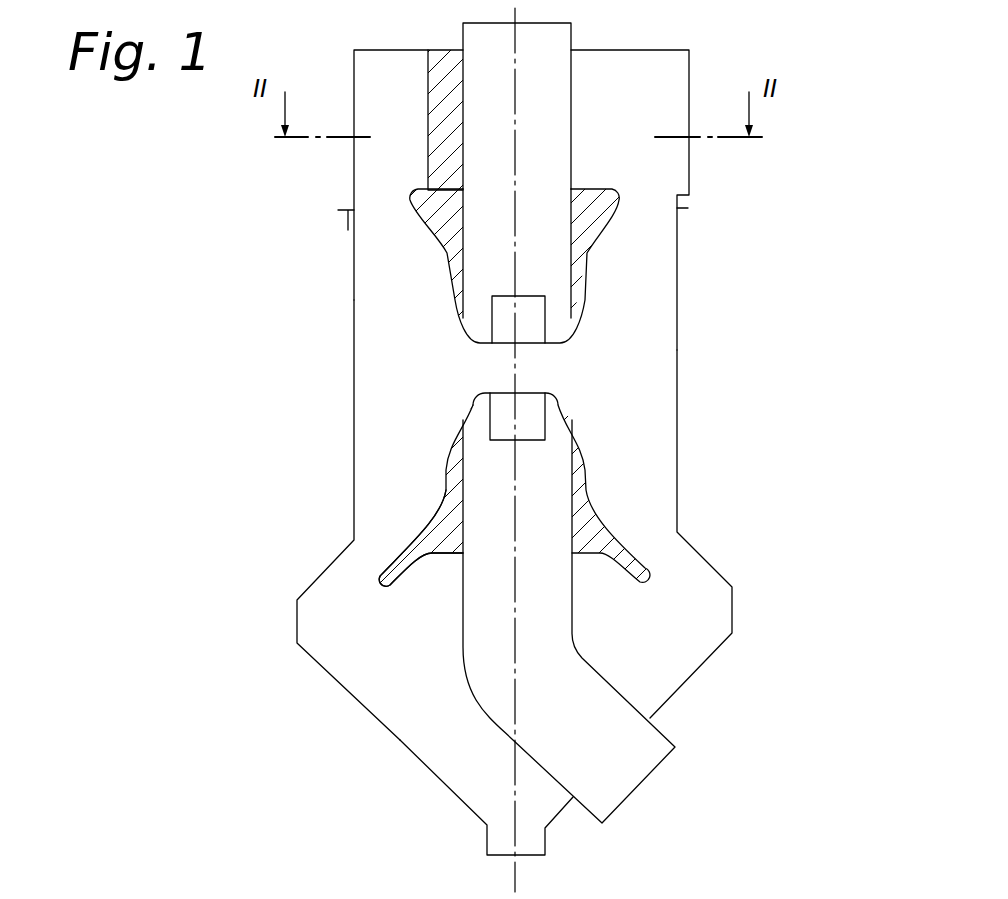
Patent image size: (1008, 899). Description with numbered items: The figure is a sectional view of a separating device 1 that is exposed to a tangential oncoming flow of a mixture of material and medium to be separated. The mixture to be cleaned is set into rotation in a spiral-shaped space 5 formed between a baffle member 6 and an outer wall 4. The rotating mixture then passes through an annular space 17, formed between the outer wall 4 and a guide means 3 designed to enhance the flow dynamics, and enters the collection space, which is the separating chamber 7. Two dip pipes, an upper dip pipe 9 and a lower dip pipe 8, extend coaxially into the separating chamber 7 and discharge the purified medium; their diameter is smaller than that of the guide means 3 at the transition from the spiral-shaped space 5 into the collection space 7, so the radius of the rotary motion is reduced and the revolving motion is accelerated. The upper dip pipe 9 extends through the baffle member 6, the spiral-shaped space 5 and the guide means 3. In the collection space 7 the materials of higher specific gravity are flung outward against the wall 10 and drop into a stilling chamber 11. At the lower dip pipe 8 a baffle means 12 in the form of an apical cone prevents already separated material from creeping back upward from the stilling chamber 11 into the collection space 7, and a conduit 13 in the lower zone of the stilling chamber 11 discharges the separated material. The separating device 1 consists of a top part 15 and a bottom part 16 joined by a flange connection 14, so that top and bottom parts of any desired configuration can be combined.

The separating device 1 is at (180, 236).
The guide means 3 is at (445, 218).
The outer wall 4 is at (353, 95).
The spiral-shaped space 5 is at (603, 87).
The baffle member 6 is at (448, 63).
The separating chamber 7 is at (585, 368).
The lower dip pipe 8 is at (552, 467).
The upper dip pipe 9 is at (545, 55).
The wall of the collecting space 10 is at (354, 372).
The stilling chamber 11 is at (688, 612).
The baffle means 12 is at (442, 525).
The conduit 13 is at (502, 843).
The flange connection 14 is at (348, 230).
The top part 15 is at (796, 182).
The bottom part 16 is at (830, 309).
The annular space 17 is at (425, 282).